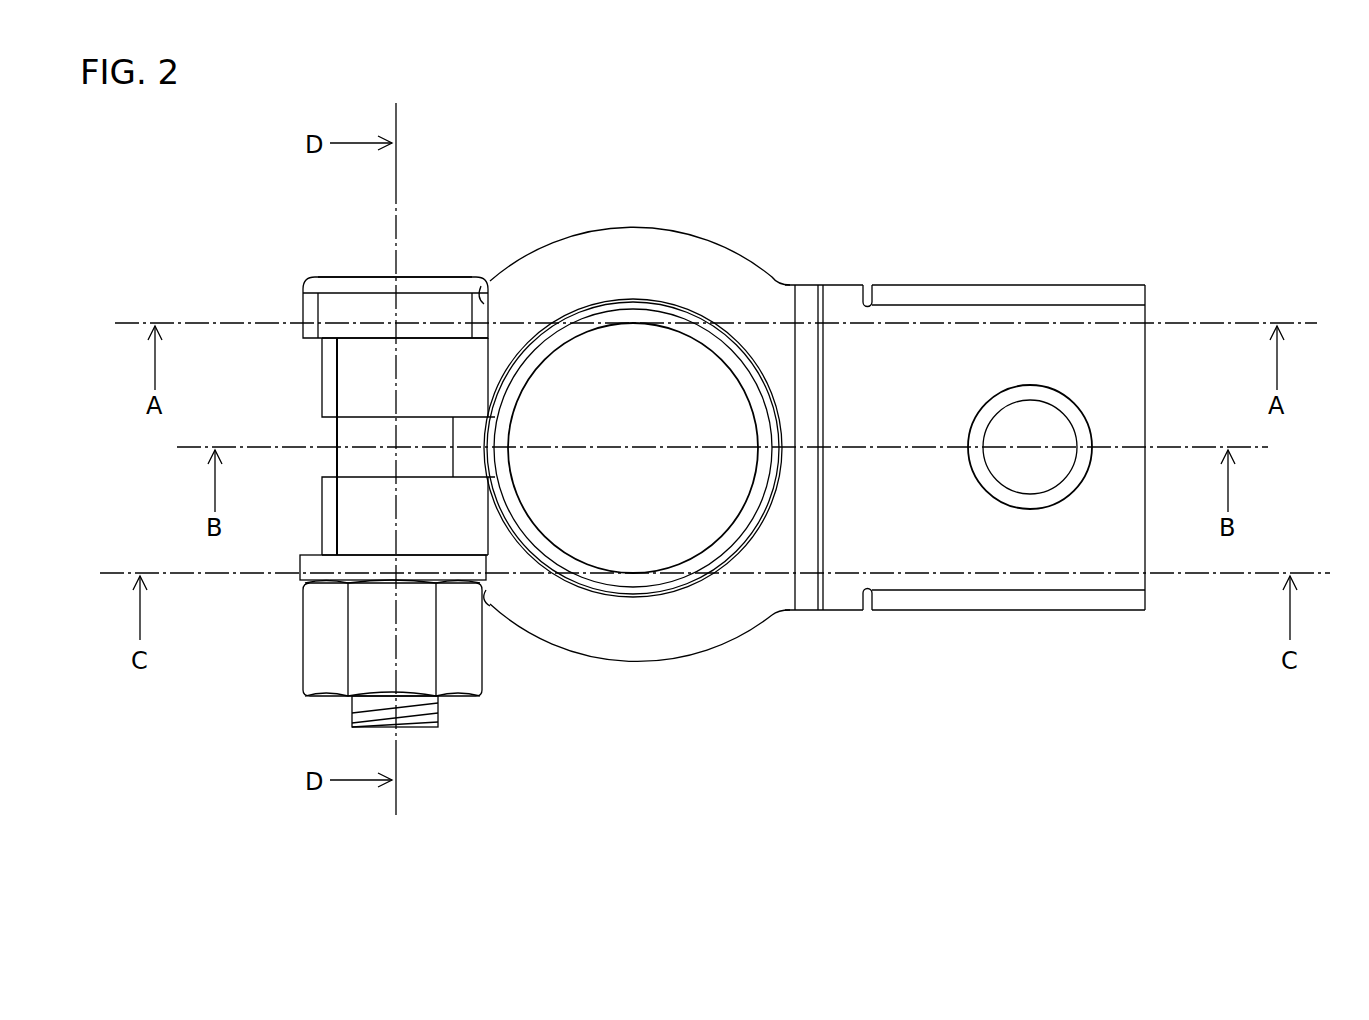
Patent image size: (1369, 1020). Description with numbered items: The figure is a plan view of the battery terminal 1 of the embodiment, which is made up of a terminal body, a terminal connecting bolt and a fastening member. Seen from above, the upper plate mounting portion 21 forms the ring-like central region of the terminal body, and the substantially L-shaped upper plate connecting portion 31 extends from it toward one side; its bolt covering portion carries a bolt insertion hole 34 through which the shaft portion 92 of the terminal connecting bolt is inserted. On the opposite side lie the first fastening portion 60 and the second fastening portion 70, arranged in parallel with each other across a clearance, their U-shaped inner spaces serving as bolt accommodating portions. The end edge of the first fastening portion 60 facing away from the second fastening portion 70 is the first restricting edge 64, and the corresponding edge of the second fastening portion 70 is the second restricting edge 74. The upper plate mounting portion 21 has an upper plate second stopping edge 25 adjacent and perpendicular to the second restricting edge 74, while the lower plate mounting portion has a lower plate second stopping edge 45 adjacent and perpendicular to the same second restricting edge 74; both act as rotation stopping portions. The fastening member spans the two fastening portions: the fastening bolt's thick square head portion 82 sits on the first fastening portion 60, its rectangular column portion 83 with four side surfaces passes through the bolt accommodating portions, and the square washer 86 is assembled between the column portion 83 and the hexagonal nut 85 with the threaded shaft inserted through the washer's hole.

The battery terminal 1 is at (1152, 104).
The upper plate mounting portion 21 is at (717, 617).
The upper plate connecting portion 31 is at (952, 640).
The shaft portion 92 is at (1022, 422).
The bolt insertion hole 34 is at (1048, 402).
The column portion 83 is at (347, 435).
The first fastening portion 60 is at (442, 357).
The head portion 82 is at (355, 290).
The first restricting edge 64 is at (380, 340).
The upper plate second stopping edge 25 is at (481, 293).
The second fastening portion 70 is at (347, 523).
The second restricting edge 74 is at (350, 583).
The washer 86 is at (380, 563).
The nut 85 is at (458, 680).
The lower plate second stopping edge 45 is at (480, 600).